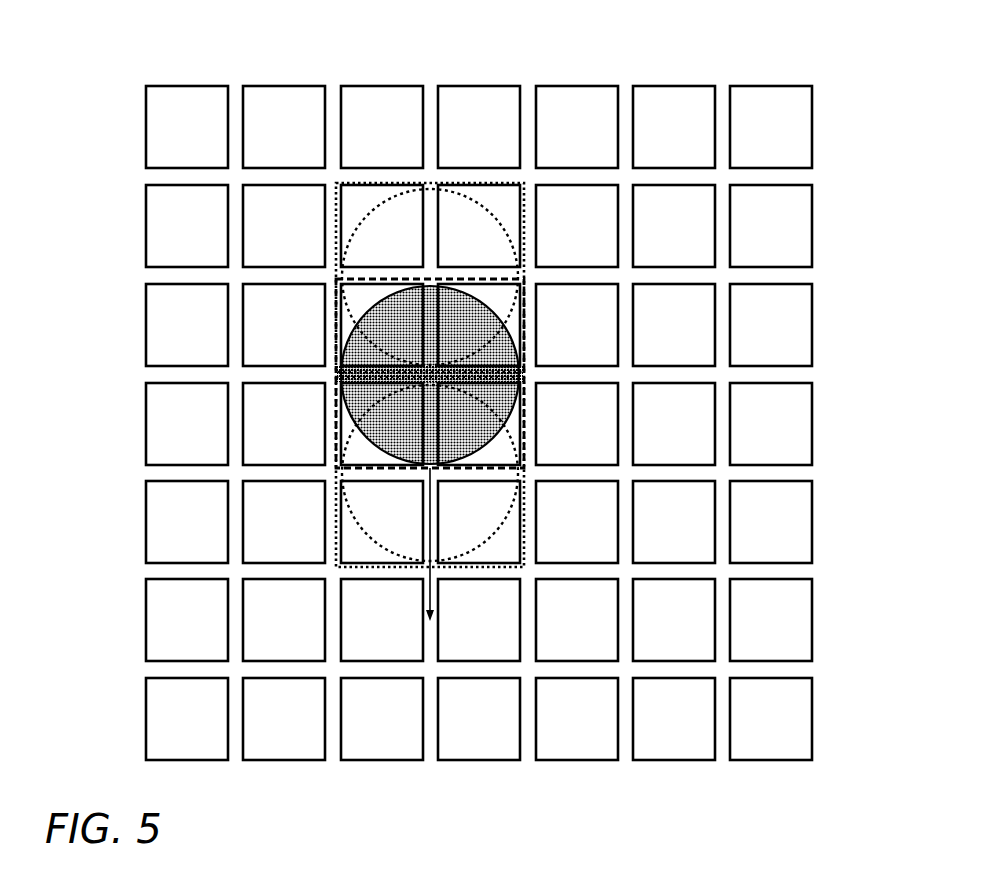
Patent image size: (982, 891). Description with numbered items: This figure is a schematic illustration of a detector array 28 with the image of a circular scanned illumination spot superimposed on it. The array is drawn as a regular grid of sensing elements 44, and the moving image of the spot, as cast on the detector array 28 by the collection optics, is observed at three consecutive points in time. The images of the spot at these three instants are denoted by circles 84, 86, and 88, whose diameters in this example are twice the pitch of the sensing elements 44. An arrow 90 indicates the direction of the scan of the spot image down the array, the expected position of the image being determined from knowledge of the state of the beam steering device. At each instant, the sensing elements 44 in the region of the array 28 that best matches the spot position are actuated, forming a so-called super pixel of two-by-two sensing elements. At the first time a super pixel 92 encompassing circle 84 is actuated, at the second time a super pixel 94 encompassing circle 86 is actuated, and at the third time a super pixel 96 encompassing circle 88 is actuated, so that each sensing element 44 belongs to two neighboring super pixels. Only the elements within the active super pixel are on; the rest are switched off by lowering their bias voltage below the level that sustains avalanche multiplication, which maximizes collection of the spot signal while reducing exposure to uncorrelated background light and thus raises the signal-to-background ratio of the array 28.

The detector array 28 is at (468, 393).
The sensing element 44 is at (813, 125).
The circle 84 is at (358, 221).
The circle 86 is at (510, 420).
The circle 88 is at (356, 522).
The arrow 90 is at (432, 622).
The super pixel 92 is at (335, 204).
The super pixel 94 is at (524, 324).
The super pixel 96 is at (335, 542).